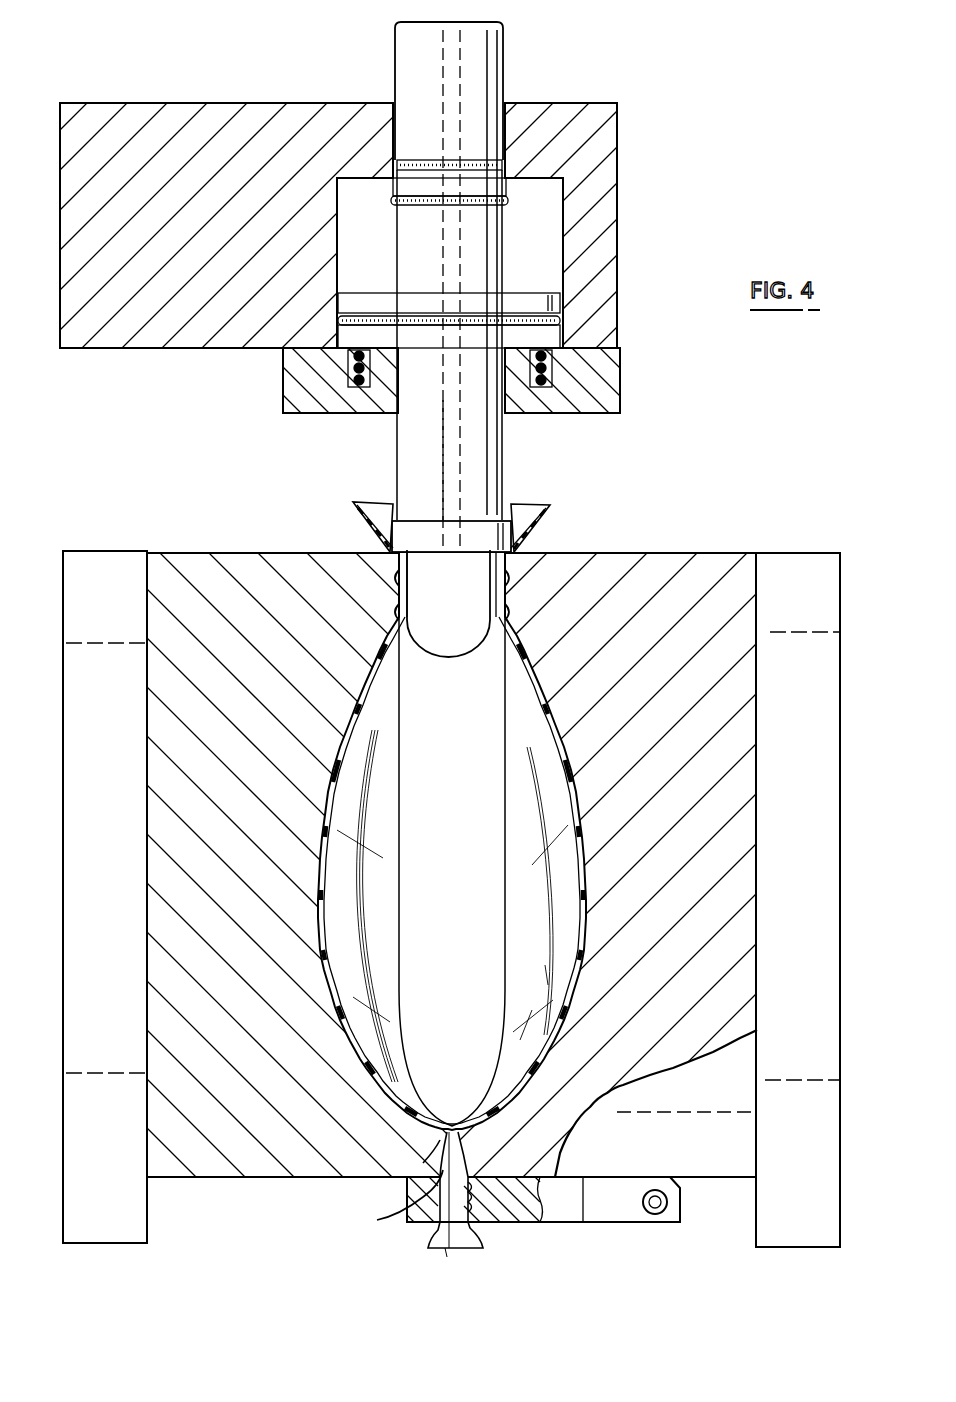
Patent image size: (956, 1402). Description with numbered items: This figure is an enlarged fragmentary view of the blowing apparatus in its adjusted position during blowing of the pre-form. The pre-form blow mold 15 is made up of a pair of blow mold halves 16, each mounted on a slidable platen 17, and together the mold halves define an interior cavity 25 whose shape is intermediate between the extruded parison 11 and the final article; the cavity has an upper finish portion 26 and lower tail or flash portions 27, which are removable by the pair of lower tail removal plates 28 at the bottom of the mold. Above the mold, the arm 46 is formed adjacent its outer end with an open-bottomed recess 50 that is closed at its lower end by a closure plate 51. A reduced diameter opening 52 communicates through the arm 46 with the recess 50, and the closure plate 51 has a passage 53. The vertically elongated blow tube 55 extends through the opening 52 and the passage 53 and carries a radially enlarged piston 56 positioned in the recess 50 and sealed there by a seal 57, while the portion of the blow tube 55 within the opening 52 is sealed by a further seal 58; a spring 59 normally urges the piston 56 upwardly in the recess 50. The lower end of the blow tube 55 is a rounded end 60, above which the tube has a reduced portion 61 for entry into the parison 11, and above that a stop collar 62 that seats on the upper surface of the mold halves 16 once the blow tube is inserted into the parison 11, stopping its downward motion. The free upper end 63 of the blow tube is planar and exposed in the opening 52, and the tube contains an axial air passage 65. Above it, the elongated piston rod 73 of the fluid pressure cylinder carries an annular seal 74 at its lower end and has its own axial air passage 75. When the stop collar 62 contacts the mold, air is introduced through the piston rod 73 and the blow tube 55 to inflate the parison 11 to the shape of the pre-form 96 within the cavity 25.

The extruded parison 11 is at (505, 832).
The pre-form blow mold 15 is at (650, 548).
The blow mold halves 16 is at (165, 692).
The platen 17 is at (93, 566).
The interior cavity 25 is at (548, 712).
The upper finish portion 26 is at (508, 578).
The tail or flash portions 27 is at (437, 1236).
The lower tail removal plates 28 is at (597, 1215).
The arm 46 is at (605, 108).
The open bottomed recess 50 is at (562, 208).
The closure plate 51 is at (600, 405).
The reduced diameter opening 52 is at (399, 103).
The passage 53 is at (398, 413).
The blow tube 55 is at (508, 458).
The piston 56 is at (560, 300).
The seal 57 is at (560, 320).
The seal 58 is at (408, 206).
The spring 59 is at (554, 365).
The rounded end 60 is at (432, 658).
The reduced portion 61 is at (400, 597).
The stop collar 62 is at (520, 535).
The free upper end 63 is at (420, 180).
The axial air passage 65 is at (443, 470).
The piston rod 73 is at (402, 34).
The annular seal 74 is at (428, 160).
The axial air passage 75 is at (440, 62).
The pre-form 96 is at (330, 828).